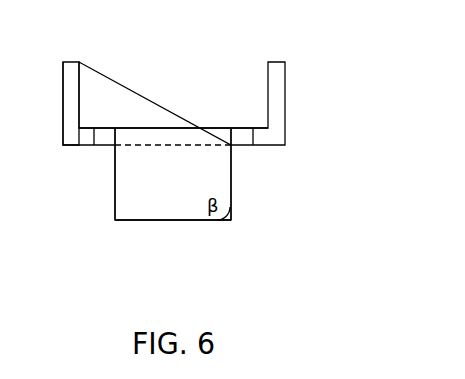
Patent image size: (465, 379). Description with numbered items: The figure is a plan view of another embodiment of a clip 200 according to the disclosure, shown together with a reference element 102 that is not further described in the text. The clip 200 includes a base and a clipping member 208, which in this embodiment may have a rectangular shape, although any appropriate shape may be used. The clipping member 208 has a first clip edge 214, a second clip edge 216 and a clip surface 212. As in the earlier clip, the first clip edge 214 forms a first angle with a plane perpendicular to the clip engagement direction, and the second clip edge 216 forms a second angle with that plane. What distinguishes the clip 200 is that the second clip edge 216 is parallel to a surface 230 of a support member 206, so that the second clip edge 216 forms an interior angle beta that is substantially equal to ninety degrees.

The clip 200 is at (299, 47).
The rail 102 is at (60, 67).
The support member 206 is at (188, 140).
The clipping member 208 is at (112, 175).
The clip surface 212 is at (125, 206).
The first clip edge 214 is at (233, 178).
The second clip edge 216 is at (155, 222).
The surface 230 is at (161, 147).